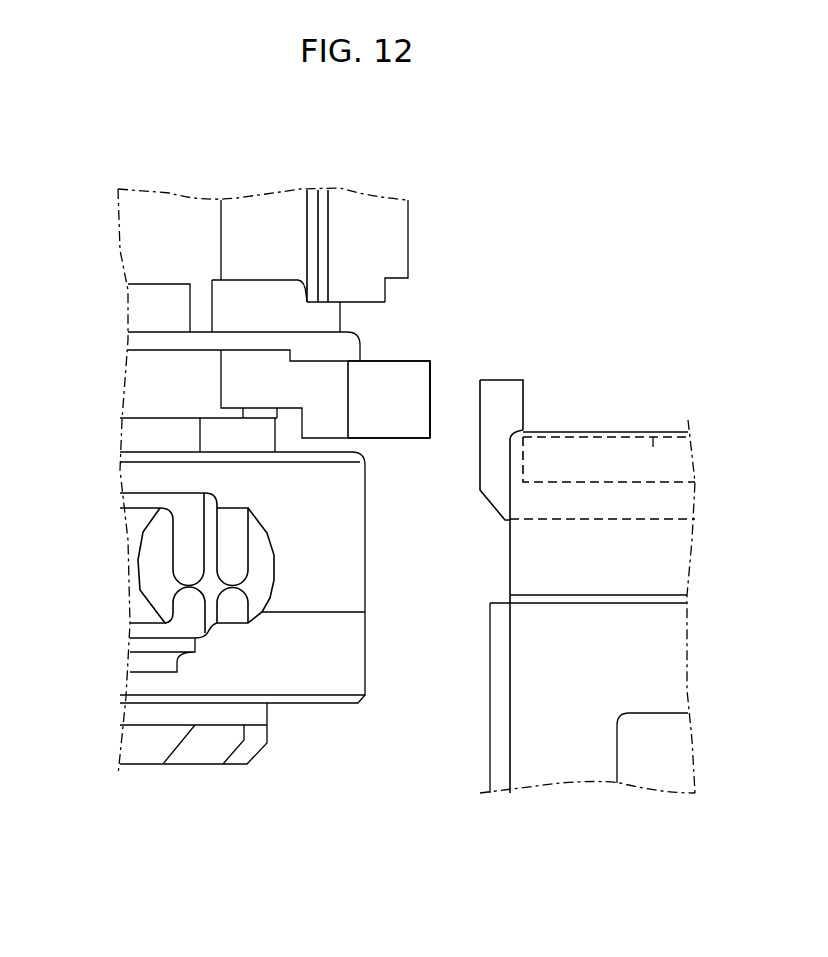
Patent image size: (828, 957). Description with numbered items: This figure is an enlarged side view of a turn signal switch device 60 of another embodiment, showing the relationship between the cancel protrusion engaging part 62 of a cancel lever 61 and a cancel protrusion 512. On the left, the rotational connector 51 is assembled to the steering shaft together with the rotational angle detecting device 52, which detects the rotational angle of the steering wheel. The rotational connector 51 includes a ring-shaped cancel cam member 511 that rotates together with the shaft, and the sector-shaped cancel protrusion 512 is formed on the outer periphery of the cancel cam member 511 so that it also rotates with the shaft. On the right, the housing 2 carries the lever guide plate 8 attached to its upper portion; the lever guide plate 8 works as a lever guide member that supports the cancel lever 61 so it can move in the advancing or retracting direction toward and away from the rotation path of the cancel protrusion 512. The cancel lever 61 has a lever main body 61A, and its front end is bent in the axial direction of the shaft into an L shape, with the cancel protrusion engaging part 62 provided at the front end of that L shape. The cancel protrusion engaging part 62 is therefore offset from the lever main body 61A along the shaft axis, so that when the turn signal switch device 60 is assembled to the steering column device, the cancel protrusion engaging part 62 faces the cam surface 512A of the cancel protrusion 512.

The housing 2 is at (518, 748).
The lever guide plate 8 is at (653, 447).
The rotational connector 51 is at (168, 356).
The cancel cam member 511 is at (258, 365).
The cancel protrusion 512 is at (403, 373).
The cam surface 512A is at (430, 375).
The rotational angle detecting device 52 is at (147, 485).
The turn signal switch device 60 is at (553, 374).
The cancel lever 61 is at (490, 485).
The lever main body 61A is at (603, 490).
The cancel protrusion engaging part 62 is at (480, 392).